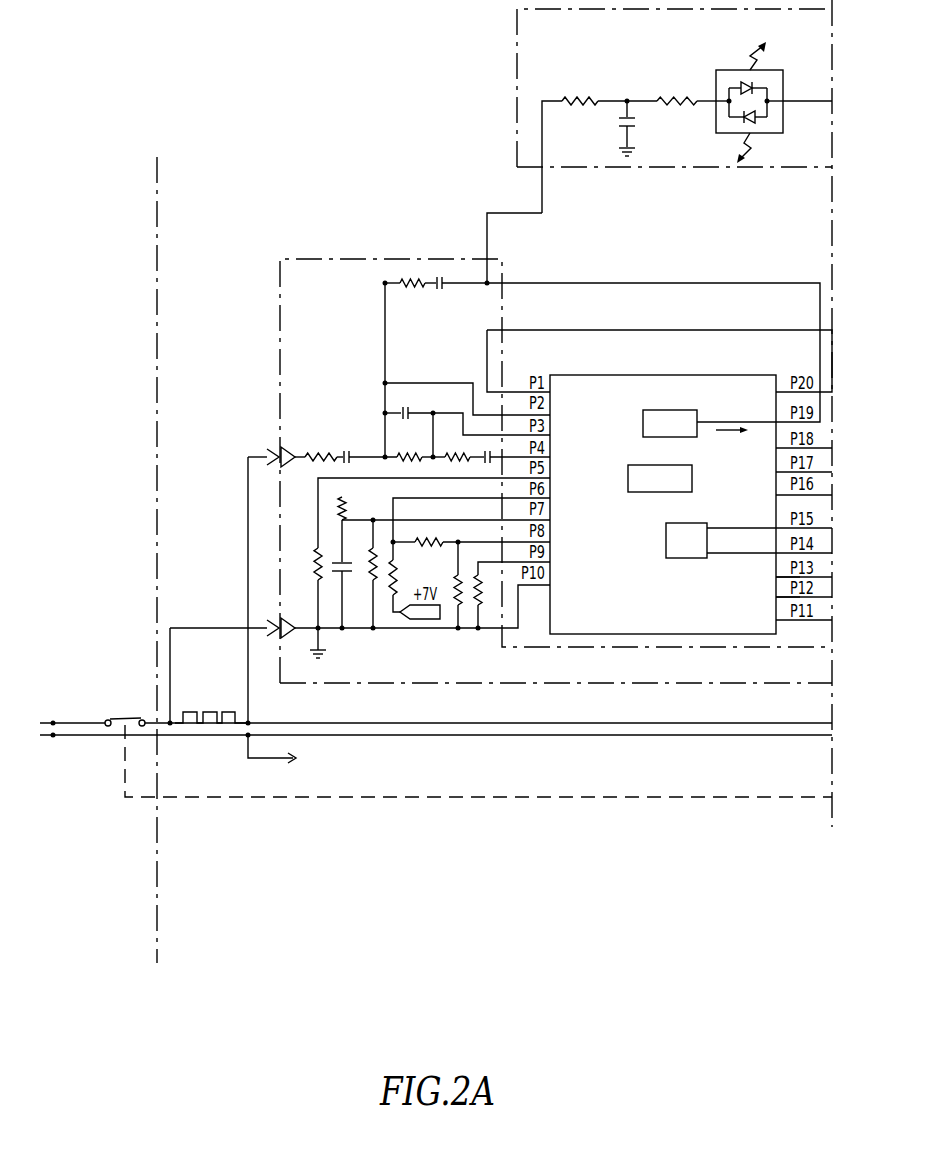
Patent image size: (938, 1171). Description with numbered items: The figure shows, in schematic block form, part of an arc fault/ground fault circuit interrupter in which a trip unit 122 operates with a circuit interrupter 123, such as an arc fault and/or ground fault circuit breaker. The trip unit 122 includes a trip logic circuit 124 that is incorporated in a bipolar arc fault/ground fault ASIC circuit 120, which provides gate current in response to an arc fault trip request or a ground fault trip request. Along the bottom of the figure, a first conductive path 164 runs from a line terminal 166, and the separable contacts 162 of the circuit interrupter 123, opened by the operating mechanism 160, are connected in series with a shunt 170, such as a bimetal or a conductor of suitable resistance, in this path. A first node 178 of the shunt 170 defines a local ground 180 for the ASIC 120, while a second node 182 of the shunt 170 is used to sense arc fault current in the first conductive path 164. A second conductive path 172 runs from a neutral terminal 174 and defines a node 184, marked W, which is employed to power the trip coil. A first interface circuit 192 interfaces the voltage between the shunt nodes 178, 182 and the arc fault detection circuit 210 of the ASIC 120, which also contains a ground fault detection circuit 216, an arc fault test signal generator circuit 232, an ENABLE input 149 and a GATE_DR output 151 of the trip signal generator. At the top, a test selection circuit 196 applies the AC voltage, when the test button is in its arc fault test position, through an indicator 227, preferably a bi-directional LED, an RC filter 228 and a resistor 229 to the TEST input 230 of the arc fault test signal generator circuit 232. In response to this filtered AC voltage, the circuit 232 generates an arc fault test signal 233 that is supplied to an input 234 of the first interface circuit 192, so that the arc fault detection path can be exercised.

The test selection circuit 196 is at (517, 20).
The resistor 229 is at (583, 98).
The indicator 227 is at (718, 70).
The RC filter 228 is at (659, 135).
The first interface circuit 192 is at (383, 258).
The input 234 is at (487, 286).
The input (TEST) 230 is at (779, 421).
The trip logic circuit 124 is at (622, 388).
The arc fault test signal generator circuit (ARCTST) 232 is at (665, 410).
The arc fault test signal 233 is at (716, 431).
The arc fault detection circuit (ARC_DET) 210 is at (668, 493).
The ground fault detection circuit (GFI) 216 is at (680, 559).
The trip signal generator GATE_DR output 151 is at (777, 579).
The trip signal generator ENABLE input 149 is at (777, 599).
The bipolar arc fault/ground fault ASIC circuit 120 is at (610, 636).
The local ground 180 is at (326, 656).
The first conductive path 164 is at (407, 722).
The second conductive path 172 is at (447, 737).
The operating mechanism 160 is at (104, 692).
The line terminal 166 is at (53, 721).
The neutral terminal 174 is at (53, 738).
The separable contacts 162 is at (124, 716).
The first node 178 is at (171, 721).
The shunt 170 is at (210, 710).
The second node 182 is at (251, 723).
The node (W) 184 is at (246, 737).
The circuit interrupter 123 is at (98, 834).
The trip unit 122 is at (616, 859).